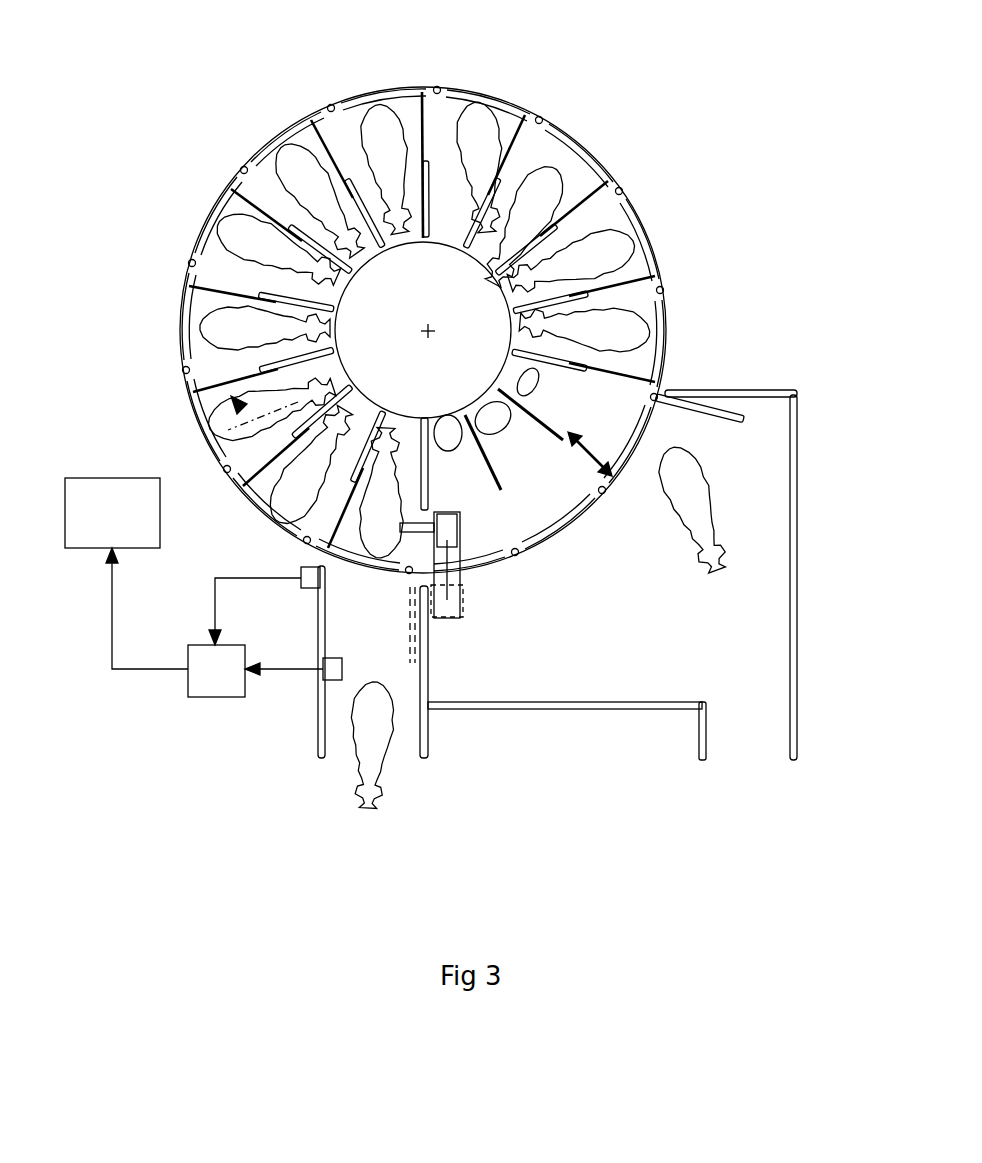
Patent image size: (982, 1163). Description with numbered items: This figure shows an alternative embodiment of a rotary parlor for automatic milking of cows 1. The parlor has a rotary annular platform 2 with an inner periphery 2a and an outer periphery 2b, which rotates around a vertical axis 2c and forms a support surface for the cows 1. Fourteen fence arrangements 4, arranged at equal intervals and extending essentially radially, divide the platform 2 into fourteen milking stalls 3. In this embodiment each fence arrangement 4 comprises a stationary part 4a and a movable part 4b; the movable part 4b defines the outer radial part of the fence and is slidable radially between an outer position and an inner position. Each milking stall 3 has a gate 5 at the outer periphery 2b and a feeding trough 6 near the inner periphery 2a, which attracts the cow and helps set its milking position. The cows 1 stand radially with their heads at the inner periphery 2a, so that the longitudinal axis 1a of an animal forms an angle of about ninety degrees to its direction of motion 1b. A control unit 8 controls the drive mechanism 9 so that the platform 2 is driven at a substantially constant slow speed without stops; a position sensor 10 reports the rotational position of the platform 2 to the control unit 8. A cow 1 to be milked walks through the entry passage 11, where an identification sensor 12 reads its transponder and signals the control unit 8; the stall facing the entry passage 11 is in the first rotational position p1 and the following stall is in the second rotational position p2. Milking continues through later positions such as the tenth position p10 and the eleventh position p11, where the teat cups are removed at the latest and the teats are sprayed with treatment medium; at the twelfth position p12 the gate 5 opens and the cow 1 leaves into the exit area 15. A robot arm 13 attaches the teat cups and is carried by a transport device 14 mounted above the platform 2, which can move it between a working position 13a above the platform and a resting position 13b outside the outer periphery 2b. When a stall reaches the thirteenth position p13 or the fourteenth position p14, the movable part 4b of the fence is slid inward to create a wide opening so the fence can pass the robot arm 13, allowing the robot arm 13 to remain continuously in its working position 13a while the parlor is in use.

The cow 1 is at (375, 785).
The longitudinal axis of the animal 1a is at (228, 432).
The direction of motion of the animals 1b is at (232, 404).
The rotary annular platform 2 is at (257, 213).
The inner periphery 2a is at (423, 425).
The outer periphery 2b is at (182, 332).
The vertical axis 2c is at (430, 323).
The milking stall 3 is at (316, 143).
The fence arrangement 4 is at (608, 290).
The stationary part 4a is at (505, 180).
The movable part 4b is at (509, 92).
The gate 5 is at (410, 607).
The feeding trough 6 is at (356, 262).
The control unit 8 is at (217, 680).
The drive mechanism 9 is at (113, 508).
The position sensor 10 is at (300, 575).
The entry passage 11 is at (400, 700).
The identification sensor 12 is at (330, 672).
The robot arm 13 is at (460, 530).
The working position 13a is at (424, 528).
The resting position 13b is at (463, 612).
The transport device 14 is at (447, 575).
The exit area 15 is at (738, 645).
The first rotational position p1 is at (345, 535).
The second rotational position p2 is at (262, 485).
The tenth rotational position p10 is at (637, 267).
The eleventh position p11 is at (623, 362).
The twelfth position p12 is at (622, 427).
The thirteenth position p13 is at (558, 497).
The fourteenth rotational position p14 is at (478, 490).